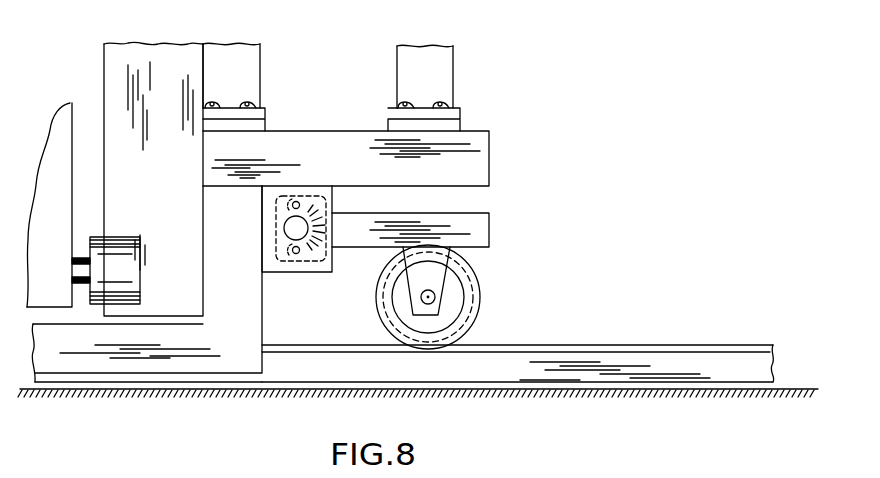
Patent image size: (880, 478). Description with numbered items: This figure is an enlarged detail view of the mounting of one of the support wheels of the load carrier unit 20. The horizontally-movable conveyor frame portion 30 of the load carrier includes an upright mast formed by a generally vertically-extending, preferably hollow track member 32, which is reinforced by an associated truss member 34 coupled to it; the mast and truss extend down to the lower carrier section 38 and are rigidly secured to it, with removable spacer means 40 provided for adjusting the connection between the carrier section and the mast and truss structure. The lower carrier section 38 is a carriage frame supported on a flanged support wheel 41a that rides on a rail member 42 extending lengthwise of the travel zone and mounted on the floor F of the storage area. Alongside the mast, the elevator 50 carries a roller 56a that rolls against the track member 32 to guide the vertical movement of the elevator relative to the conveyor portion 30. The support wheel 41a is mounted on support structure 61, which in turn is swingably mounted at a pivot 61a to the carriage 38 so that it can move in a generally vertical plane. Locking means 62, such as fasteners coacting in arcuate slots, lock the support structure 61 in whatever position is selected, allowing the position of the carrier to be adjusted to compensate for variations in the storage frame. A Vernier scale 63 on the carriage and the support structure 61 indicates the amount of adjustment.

The load carrier unit 20 is at (270, 62).
The conveyor frame portion 30 is at (489, 158).
The track member 32 is at (140, 53).
The truss member 34 is at (250, 77).
The lower carrier section 38 is at (230, 365).
The removable spacer means 40 is at (265, 122).
The support wheel 41a is at (478, 297).
The rail member 42 is at (573, 345).
The elevator 50 is at (65, 100).
The rollers 56a is at (120, 242).
The support structure 61 is at (490, 224).
The swingable mounting 61a is at (300, 228).
The locking means 62 is at (300, 206).
The Vernier scale 63 is at (318, 255).
The floor F is at (792, 390).